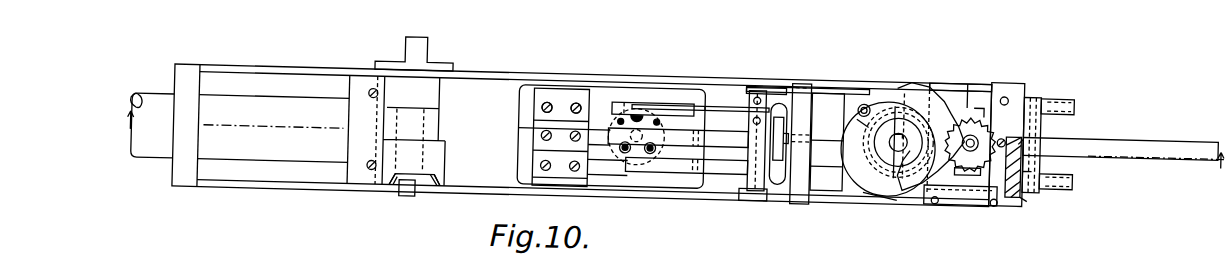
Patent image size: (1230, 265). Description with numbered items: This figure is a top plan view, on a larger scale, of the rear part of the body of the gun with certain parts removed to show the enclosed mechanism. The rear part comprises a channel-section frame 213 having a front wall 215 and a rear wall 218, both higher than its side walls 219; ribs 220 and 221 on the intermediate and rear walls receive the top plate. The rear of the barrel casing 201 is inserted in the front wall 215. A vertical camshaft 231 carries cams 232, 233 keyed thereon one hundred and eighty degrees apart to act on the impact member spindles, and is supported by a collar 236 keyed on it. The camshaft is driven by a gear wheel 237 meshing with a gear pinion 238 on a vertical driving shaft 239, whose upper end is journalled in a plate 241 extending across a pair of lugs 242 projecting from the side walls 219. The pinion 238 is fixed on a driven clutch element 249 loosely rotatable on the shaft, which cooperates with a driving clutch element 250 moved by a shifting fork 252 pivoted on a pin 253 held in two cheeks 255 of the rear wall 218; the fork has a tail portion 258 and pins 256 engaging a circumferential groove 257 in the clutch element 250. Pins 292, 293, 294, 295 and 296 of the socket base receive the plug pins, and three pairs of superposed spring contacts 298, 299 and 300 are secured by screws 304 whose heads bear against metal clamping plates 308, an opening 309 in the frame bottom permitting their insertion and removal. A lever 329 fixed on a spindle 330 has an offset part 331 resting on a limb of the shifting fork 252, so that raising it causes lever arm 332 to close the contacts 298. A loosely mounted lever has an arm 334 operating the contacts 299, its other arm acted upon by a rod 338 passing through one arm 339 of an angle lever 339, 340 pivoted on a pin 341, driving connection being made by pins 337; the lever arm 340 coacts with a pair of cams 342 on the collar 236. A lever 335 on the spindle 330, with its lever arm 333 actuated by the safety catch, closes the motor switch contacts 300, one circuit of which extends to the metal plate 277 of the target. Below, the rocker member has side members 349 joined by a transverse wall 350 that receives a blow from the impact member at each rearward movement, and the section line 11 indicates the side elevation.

The section line 11 is at (671, 148).
The barrel casing 201 is at (158, 162).
The channel-section frame 213 is at (466, 81).
The front wall 215 is at (177, 84).
The rear wall 218 is at (1020, 180).
The side walls 219 is at (256, 68).
The rib 220 is at (368, 168).
The rib 221 is at (1028, 64).
The vertical camshaft 231 is at (898, 88).
The cam 232 is at (918, 92).
The cam 233 is at (872, 180).
The collar 236 is at (888, 149).
The gear wheel 237 is at (880, 150).
The gear pinion 238 is at (1005, 118).
The vertical driving shaft 239 is at (1027, 118).
The plate 241 is at (997, 242).
The lugs 242 is at (952, 64).
The driven clutch element 249 is at (1035, 160).
The driving clutch element 250 is at (997, 182).
The shifting fork 252 is at (1012, 66).
The pin 253 is at (1040, 83).
The cheeks 255 is at (1070, 78).
The pins 256 is at (982, 110).
The circumferential groove 257 is at (950, 175).
The tail portion 258 is at (1150, 128).
The metal plate 277 is at (802, 68).
The pin 292 is at (638, 103).
The pin 293 is at (660, 108).
The pin 294 is at (672, 93).
The pin 295 is at (654, 142).
The pin 296 is at (629, 142).
The spring contacts 298 is at (618, 92).
The spring contacts 299 is at (597, 117).
The spring contacts 300 is at (640, 160).
The screws 304 is at (576, 93).
The metal clamping plates 308 is at (536, 109).
The opening 309 is at (697, 86).
The lever 329 is at (820, 72).
The spindle 330 is at (757, 72).
The offset part 331 is at (975, 95).
The lever arm 332 is at (722, 95).
The lever arm 333 is at (760, 180).
The arm 334 is at (735, 130).
The lever 335 is at (742, 175).
The pins 337 is at (848, 155).
The rod 338 is at (829, 126).
The arm of angle lever 339 is at (828, 140).
The lever arm 340 is at (931, 64).
The pin 341 is at (863, 88).
The cams 342 is at (878, 104).
The side members 349 is at (779, 88).
The transverse wall 350 is at (788, 118).